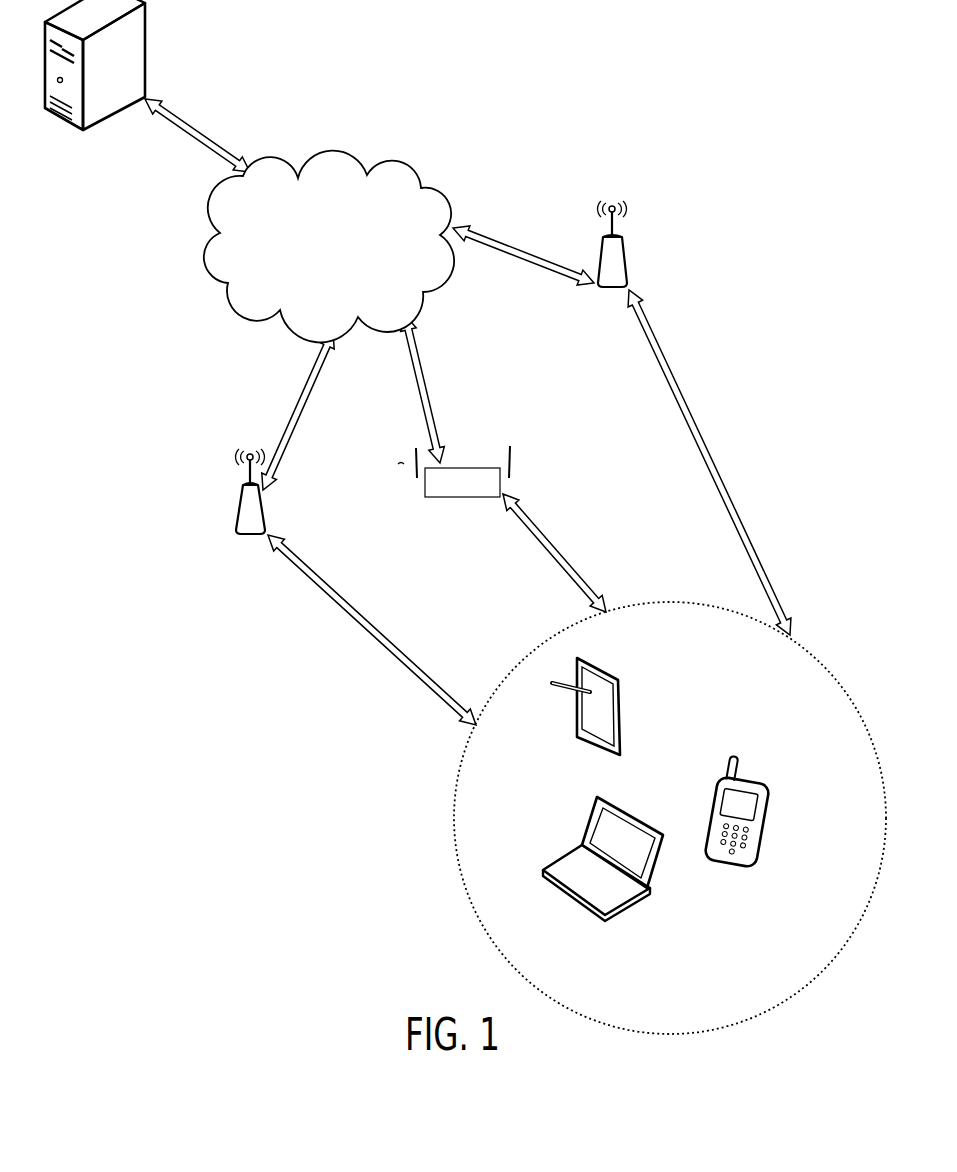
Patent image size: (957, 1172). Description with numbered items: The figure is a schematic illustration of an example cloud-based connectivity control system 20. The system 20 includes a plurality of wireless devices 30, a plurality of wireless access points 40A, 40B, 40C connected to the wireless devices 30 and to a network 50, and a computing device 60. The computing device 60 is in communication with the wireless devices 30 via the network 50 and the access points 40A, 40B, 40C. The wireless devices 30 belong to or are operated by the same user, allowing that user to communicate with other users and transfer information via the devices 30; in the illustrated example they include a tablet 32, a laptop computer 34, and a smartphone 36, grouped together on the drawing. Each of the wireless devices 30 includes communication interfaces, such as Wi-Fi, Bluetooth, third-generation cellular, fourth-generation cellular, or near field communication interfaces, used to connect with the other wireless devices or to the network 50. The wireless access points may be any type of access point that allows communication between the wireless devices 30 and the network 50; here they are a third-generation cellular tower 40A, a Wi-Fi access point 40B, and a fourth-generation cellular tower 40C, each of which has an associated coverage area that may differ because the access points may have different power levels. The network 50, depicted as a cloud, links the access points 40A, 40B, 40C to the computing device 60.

The cloud-based connectivity control system 20 is at (588, 70).
The wireless devices 30 is at (452, 835).
The tablet 32 is at (593, 742).
The laptop computer 34 is at (575, 907).
The smartphone 36 is at (768, 818).
The 3G tower 40A is at (237, 506).
The Wi-Fi access point 40B is at (505, 477).
The 4G tower 40C is at (630, 262).
The network 50 is at (447, 190).
The computing device 60 is at (147, 15).